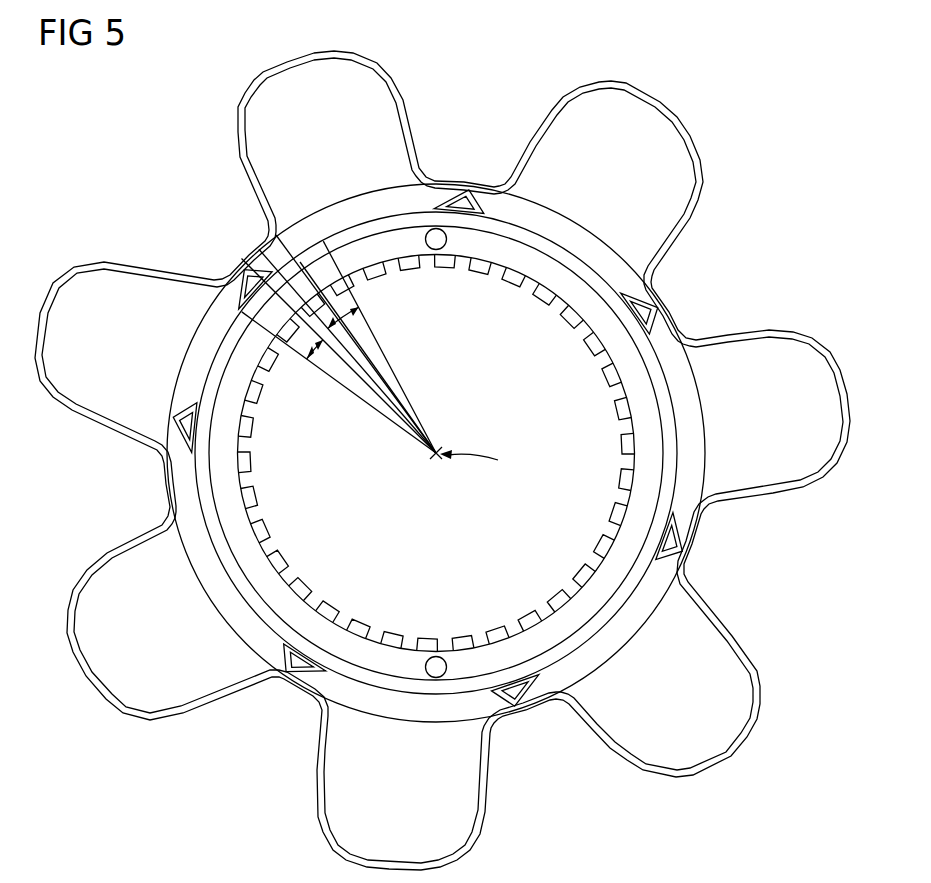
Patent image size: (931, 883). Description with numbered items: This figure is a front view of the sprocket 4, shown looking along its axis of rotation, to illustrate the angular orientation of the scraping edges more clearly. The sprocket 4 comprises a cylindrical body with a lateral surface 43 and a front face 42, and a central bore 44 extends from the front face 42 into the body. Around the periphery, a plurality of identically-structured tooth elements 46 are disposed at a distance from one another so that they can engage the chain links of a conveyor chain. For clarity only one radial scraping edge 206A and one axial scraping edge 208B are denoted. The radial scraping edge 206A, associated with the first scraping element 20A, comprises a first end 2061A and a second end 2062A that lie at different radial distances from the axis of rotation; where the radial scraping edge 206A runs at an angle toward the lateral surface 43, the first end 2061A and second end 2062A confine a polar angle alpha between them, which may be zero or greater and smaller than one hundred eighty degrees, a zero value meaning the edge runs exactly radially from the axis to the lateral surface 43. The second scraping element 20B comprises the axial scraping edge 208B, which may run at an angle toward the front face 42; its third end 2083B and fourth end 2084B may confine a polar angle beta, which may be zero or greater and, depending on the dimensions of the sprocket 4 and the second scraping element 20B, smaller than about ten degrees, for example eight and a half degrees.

The sprocket 4 is at (442, 460).
The front face 42 is at (418, 204).
The lateral surface 43 is at (479, 192).
The central bore 44 is at (294, 526).
The tooth element 46 is at (104, 268).
The first scraping element 20A is at (216, 253).
The second scraping element 20B is at (280, 354).
The radial scraping edge 206A is at (230, 291).
The first end 2061A is at (256, 304).
The second end 2062A is at (240, 262).
The axial scraping edge 208B is at (318, 252).
The third end 2083B is at (366, 268).
The fourth end 2084B is at (284, 262).